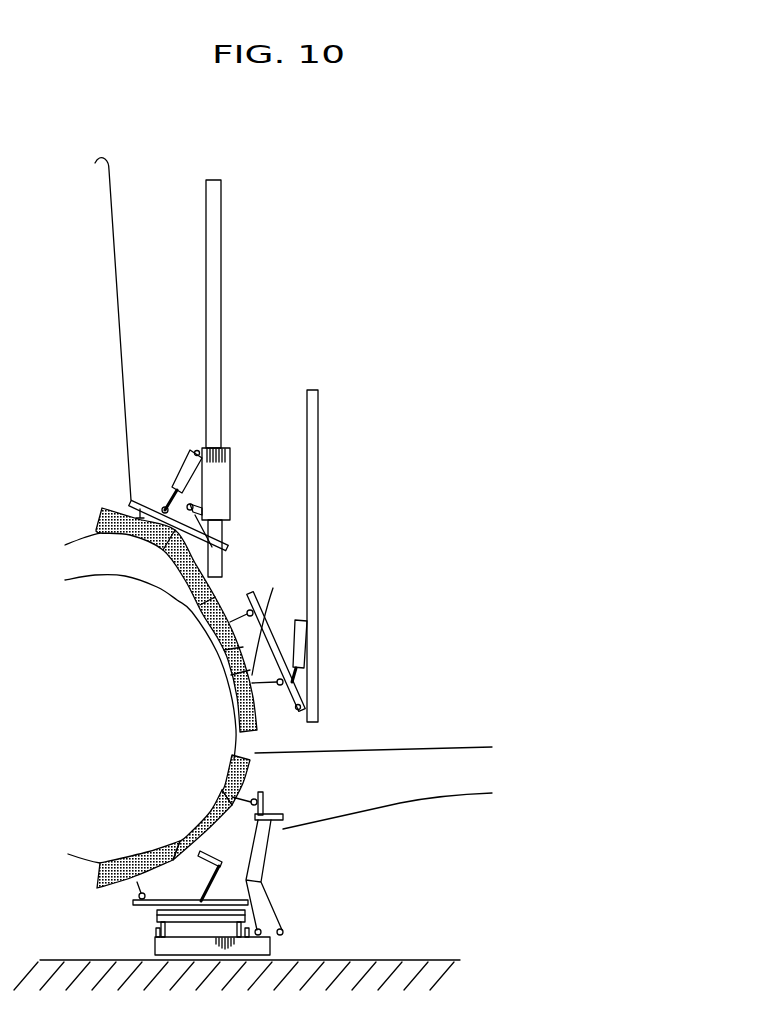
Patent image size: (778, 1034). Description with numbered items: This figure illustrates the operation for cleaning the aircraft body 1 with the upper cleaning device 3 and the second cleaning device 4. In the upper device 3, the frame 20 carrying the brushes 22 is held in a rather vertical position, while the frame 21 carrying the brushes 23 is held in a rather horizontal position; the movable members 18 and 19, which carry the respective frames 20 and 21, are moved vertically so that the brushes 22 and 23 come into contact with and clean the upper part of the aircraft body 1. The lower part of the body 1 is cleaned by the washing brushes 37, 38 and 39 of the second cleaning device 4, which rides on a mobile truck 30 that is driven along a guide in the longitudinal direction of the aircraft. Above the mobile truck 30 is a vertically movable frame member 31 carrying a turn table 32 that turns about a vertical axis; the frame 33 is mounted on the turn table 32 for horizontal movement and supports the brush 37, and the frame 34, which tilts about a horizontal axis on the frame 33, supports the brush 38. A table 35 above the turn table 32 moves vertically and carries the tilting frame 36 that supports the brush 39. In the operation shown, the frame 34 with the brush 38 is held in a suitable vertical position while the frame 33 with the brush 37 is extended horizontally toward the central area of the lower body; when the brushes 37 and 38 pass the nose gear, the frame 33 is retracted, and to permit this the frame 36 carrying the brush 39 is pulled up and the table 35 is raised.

The aircraft body 1 is at (75, 547).
The first cleaning device 3 is at (232, 475).
The second cleaning device 4 is at (203, 848).
The movable member 18 is at (318, 445).
The movable member 19 is at (218, 465).
The frame 20 is at (280, 658).
The frame 21 is at (200, 543).
The brushes 22 is at (230, 613).
The brushes 23 is at (165, 512).
The mobile truck 30 is at (267, 947).
The frame member 31 is at (160, 925).
The turn table 32 is at (160, 912).
The frame 33 is at (132, 903).
The frame 34 is at (217, 872).
The table 35 is at (277, 830).
The frame 36 is at (263, 795).
The washing brush 37 is at (122, 857).
The washing brush 38 is at (182, 832).
The washing brush 39 is at (230, 773).